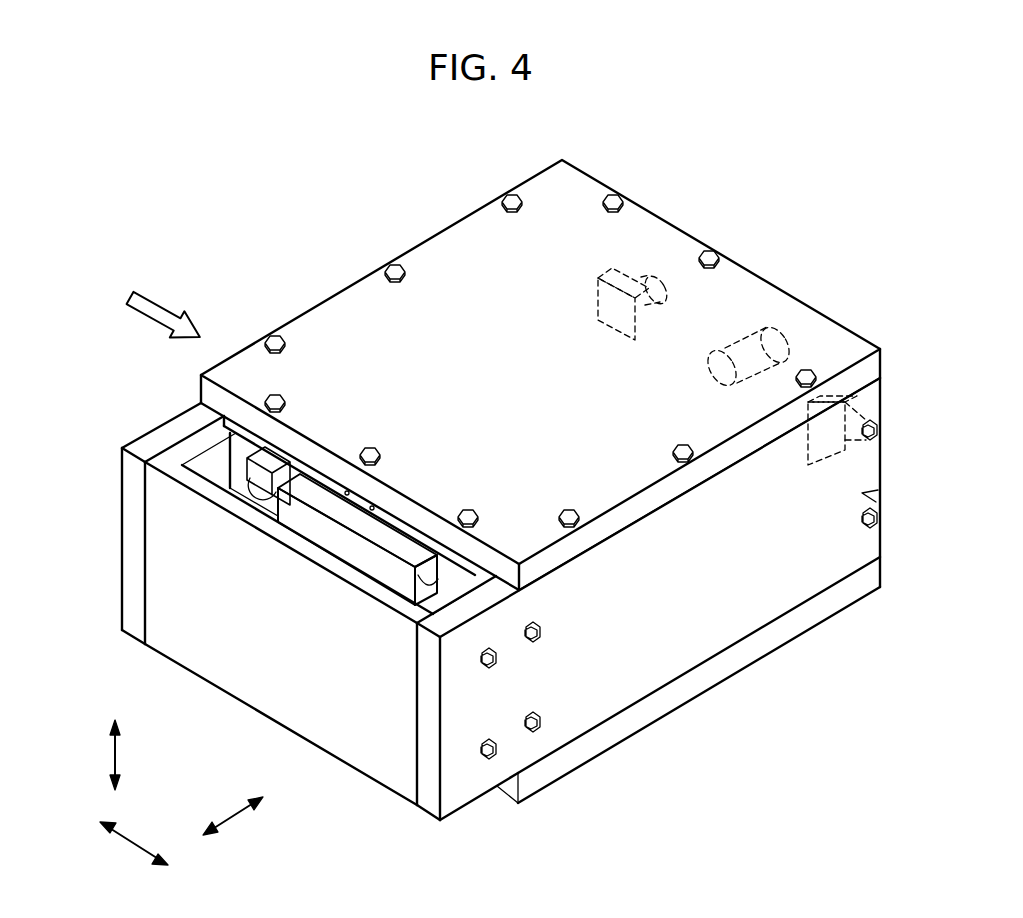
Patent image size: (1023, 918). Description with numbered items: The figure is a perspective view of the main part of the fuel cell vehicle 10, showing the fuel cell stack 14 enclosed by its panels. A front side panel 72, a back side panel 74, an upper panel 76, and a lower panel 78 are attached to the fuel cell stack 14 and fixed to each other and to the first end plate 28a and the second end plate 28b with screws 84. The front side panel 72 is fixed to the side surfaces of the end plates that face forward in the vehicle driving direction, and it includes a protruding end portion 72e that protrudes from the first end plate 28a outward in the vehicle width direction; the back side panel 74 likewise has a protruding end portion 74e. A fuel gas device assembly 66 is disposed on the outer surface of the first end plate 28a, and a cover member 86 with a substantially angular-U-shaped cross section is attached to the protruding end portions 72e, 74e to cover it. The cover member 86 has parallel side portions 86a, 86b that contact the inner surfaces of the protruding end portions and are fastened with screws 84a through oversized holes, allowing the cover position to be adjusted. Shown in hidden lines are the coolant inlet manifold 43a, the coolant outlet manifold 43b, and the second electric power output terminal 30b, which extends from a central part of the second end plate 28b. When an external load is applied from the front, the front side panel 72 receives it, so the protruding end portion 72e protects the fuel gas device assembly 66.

The fuel cell vehicle 10 is at (583, 112).
The fuel cell stack 14 is at (471, 248).
The upper panel 76 is at (314, 312).
The screws 84 is at (392, 266).
The screws 84a is at (498, 755).
The front side panel 72 is at (119, 607).
The protruding end portion 72e is at (184, 420).
The cover member 86 is at (330, 765).
The side portion 86a is at (205, 462).
The side portion 86b is at (440, 602).
The back side panel 74 is at (691, 655).
The protruding end portion 74e is at (468, 785).
The lower panel 78 is at (540, 803).
The fuel gas device assembly 66 is at (352, 547).
The first end plate 28a is at (243, 448).
The second end plate 28b is at (866, 494).
The coolant inlet manifold 43a is at (598, 298).
The coolant outlet manifold 43b is at (858, 466).
The second electric power output terminal 30b is at (782, 334).